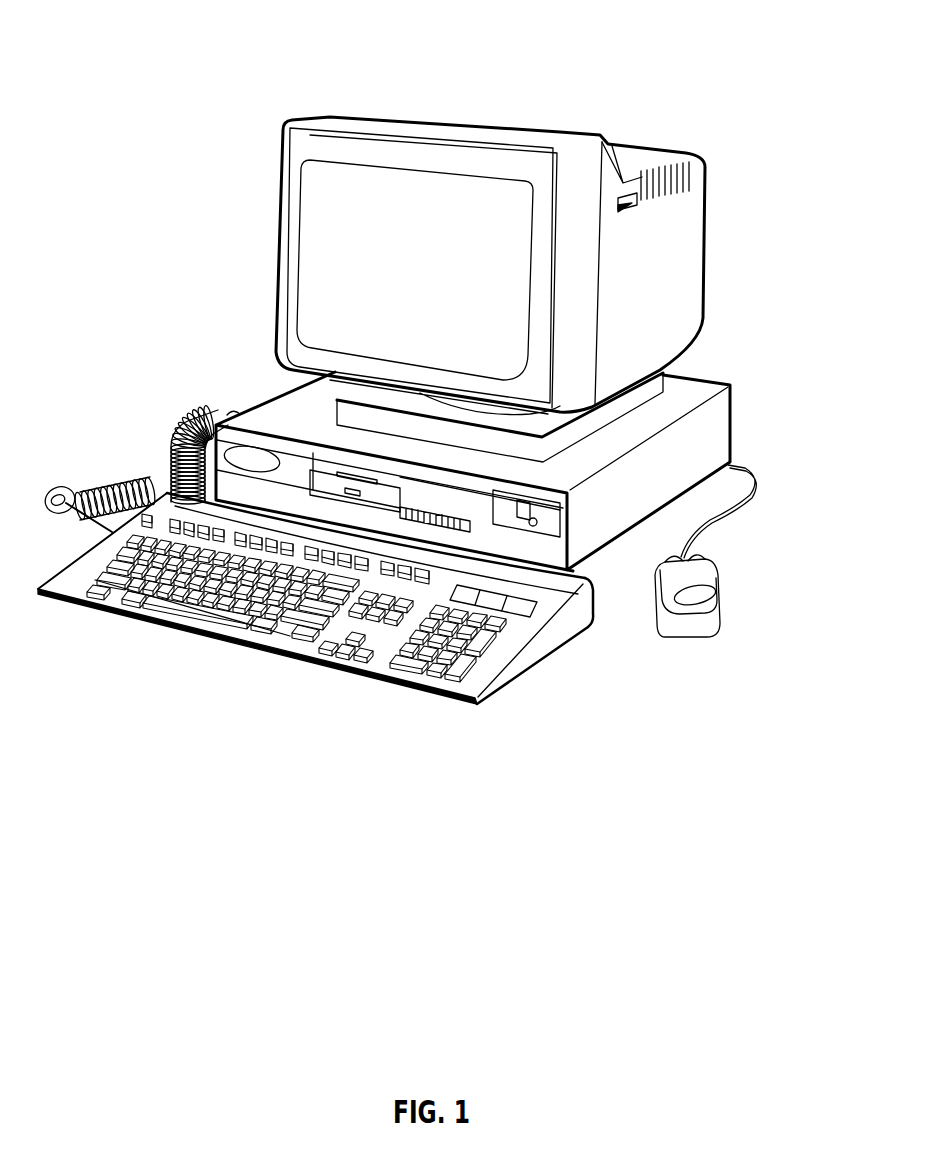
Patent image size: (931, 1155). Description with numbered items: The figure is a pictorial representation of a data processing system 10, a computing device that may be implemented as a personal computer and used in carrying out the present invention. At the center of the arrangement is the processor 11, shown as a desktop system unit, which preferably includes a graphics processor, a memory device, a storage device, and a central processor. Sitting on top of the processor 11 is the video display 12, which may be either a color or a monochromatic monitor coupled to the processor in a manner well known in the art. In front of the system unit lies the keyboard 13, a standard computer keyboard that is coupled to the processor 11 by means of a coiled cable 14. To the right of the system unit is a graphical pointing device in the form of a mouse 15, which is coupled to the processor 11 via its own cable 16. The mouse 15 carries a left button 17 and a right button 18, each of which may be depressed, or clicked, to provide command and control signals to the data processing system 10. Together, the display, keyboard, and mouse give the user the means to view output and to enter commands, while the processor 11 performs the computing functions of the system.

The data processing system 10 is at (592, 95).
The processor 11 is at (718, 418).
The video display 12 is at (275, 312).
The keyboard 13 is at (312, 667).
The cable 14 is at (177, 430).
The mouse 15 is at (697, 619).
The cable 16 is at (733, 513).
The left button 17 is at (666, 560).
The right button 18 is at (703, 560).